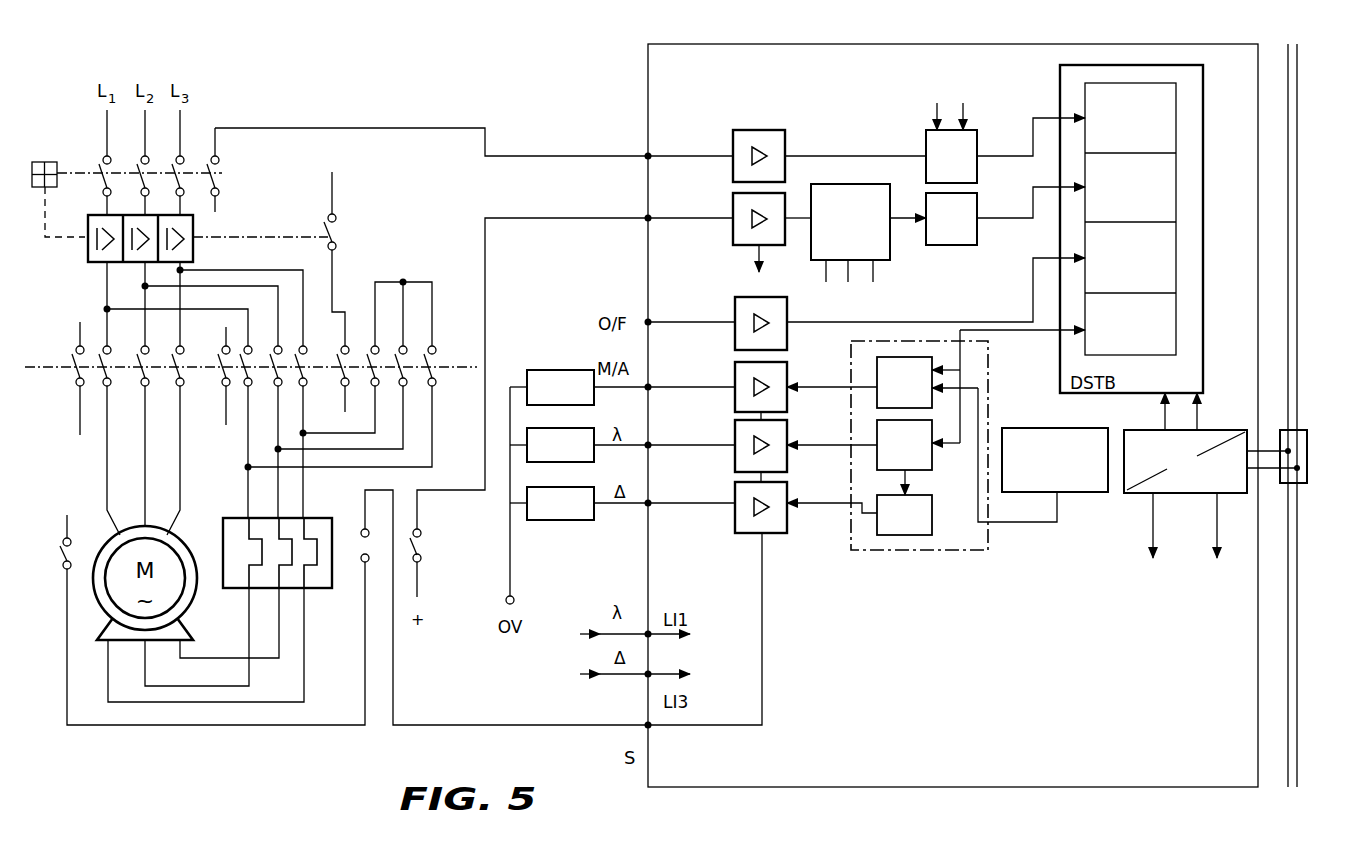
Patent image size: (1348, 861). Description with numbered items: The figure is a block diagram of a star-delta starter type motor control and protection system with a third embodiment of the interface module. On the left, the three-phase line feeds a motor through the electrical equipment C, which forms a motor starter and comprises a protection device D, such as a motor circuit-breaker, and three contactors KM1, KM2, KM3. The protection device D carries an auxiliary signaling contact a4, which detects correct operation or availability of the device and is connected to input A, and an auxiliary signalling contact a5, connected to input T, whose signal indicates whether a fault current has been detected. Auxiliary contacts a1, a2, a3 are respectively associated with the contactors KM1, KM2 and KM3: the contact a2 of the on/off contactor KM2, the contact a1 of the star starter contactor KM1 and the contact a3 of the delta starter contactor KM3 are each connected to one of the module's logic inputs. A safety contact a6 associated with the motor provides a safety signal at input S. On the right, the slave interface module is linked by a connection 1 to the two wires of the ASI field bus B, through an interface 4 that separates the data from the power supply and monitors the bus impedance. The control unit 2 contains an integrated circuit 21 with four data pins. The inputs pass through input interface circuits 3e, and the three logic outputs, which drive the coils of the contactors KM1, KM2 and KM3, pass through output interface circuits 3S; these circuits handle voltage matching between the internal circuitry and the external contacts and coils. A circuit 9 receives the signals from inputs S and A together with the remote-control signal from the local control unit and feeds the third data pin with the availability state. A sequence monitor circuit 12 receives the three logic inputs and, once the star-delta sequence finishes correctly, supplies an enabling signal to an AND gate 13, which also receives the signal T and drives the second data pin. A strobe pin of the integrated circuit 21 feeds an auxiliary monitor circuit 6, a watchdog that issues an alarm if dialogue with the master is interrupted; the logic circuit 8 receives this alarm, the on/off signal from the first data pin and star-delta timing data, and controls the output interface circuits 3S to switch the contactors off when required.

The connection 1 is at (1308, 456).
The control unit 2 is at (1200, 44).
The input interface circuit 3e is at (737, 173).
The output interface circuit 3S is at (787, 412).
The interface 4 is at (1185, 493).
The auxiliary monitor circuit 6 is at (1091, 494).
The logic circuit 8 is at (940, 550).
The circuit 9 is at (978, 173).
The sequence monitor circuit 12 is at (843, 184).
The AND gate 13 is at (978, 233).
The integrated circuit 21 is at (1125, 83).
The field bus B is at (1302, 94).
The electrical equipment C is at (268, 124).
The protection device D is at (70, 249).
The contactor KM1 is at (208, 370).
The contactor KM2 is at (54, 360).
The contactor KM3 is at (320, 338).
The auxiliary contact a1 is at (222, 372).
The auxiliary contact a2 is at (72, 370).
The auxiliary contact a3 is at (340, 362).
The auxiliary signaling contact a4 is at (222, 181).
The auxiliary signalling contact a5 is at (340, 228).
The safety contact a6 is at (62, 549).